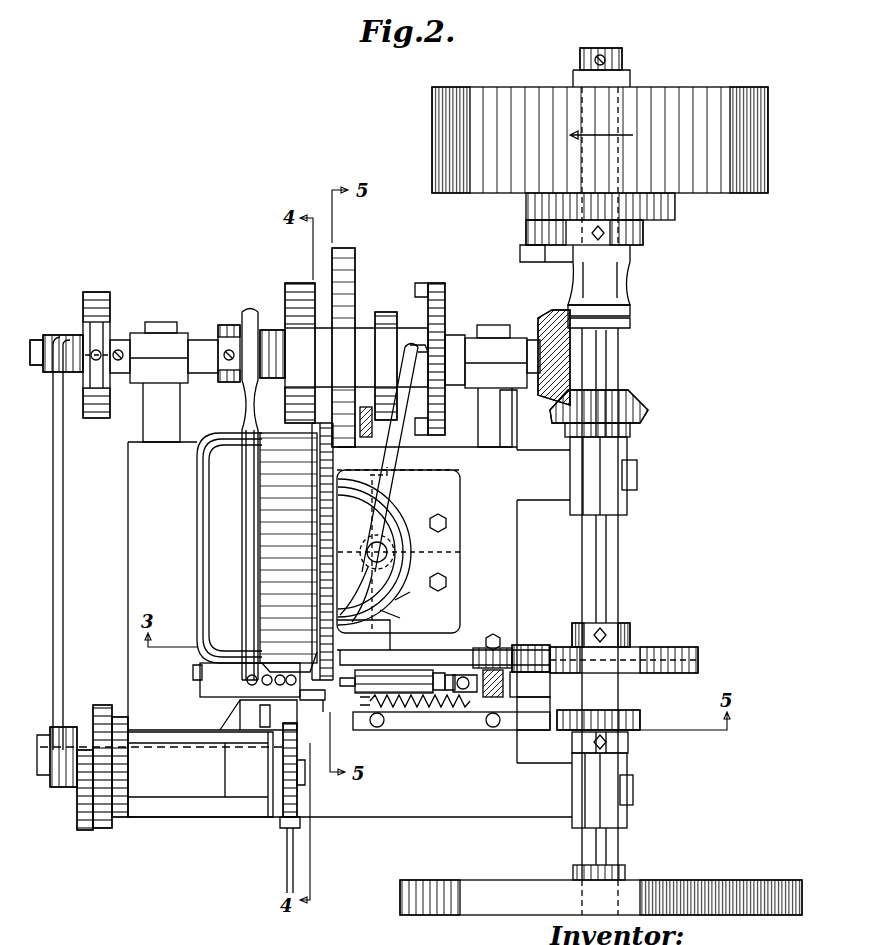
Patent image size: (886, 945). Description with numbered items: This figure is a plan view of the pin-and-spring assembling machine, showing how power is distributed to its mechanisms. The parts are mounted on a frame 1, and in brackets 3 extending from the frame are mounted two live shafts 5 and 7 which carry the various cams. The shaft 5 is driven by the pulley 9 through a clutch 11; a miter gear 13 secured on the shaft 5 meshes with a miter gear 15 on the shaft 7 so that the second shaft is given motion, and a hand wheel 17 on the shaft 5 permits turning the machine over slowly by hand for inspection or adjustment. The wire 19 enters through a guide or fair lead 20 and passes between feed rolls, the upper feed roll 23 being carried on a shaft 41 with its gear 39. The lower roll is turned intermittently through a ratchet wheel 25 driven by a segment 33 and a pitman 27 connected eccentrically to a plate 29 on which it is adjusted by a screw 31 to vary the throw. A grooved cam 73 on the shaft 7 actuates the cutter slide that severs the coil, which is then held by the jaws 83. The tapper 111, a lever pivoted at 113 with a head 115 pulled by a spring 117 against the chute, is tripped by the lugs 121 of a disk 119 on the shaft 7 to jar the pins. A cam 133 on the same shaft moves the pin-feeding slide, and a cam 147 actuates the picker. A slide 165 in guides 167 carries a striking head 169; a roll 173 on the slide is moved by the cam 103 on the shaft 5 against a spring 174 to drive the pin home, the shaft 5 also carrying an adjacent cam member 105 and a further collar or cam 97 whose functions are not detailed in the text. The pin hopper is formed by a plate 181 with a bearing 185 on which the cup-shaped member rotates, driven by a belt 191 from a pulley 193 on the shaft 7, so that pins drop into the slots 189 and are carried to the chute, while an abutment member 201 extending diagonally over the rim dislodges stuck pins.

The frame 1 is at (517, 545).
The brackets 3 is at (630, 495).
The live shaft 5 is at (636, 570).
The live shaft 7 is at (272, 330).
The pulley 9 is at (768, 128).
The clutch 11 is at (660, 250).
The miter gear 13 is at (645, 400).
The miter gear 15 is at (537, 305).
The hand wheel 17 is at (725, 880).
The wire 19 is at (287, 877).
The guide or fair lead 20 is at (285, 828).
The upper feed roll 23 is at (283, 812).
The ratchet wheel 25 is at (102, 828).
The belt 27 is at (63, 585).
The plate 29 is at (96, 292).
The screw 31 is at (50, 340).
The segment 33 is at (85, 830).
The gear 39 is at (120, 817).
The shaft 41 is at (193, 775).
The grooved cam 73 is at (300, 283).
The jaws 83 is at (323, 733).
The gear 97 is at (640, 718).
The cam 103 is at (680, 647).
The gear 105 is at (540, 645).
The tapper 111 is at (400, 462).
The pivot 113 is at (419, 601).
The head 115 is at (390, 638).
The spring 117 is at (406, 619).
The disk 119 is at (442, 275).
The lugs 121 is at (418, 345).
The cam 133 is at (343, 248).
The cam 147 is at (386, 312).
The slide 165 is at (425, 707).
The guides 167 is at (470, 730).
The striking head 169 is at (362, 693).
The roll 173 is at (490, 632).
The spring 174 is at (400, 705).
The plate 181 is at (402, 510).
The bearing 185 is at (226, 581).
The slots 189 is at (320, 545).
The belt 191 is at (240, 410).
The pulley 193 is at (240, 310).
The abutment member 201 is at (325, 540).